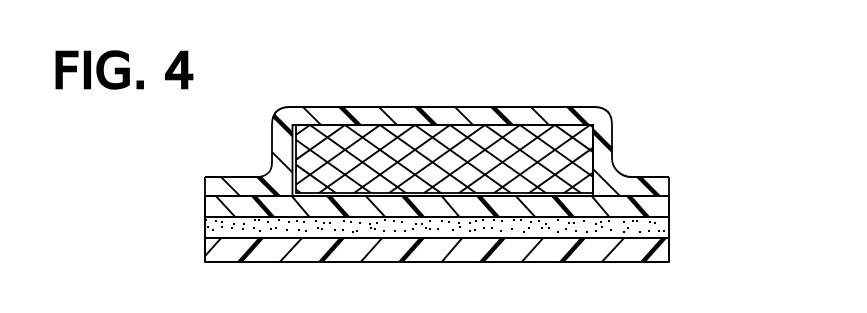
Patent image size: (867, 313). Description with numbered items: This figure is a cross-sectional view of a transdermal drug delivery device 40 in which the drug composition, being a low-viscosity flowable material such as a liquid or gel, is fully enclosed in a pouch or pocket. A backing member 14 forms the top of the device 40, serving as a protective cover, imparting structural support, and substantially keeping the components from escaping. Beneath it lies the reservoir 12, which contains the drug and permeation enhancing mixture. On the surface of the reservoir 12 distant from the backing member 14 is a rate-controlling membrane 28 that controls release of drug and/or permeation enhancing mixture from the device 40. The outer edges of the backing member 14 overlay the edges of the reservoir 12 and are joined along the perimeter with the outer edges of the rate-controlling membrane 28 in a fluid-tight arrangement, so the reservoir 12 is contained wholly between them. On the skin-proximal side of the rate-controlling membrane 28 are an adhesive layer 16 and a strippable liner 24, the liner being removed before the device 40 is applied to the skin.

The device 40 is at (497, 89).
The backing member 14 is at (604, 112).
The reservoir 12 is at (584, 147).
The rate-controlling membrane 28 is at (660, 207).
The adhesive layer 16 is at (664, 225).
The strippable liner 24 is at (660, 251).